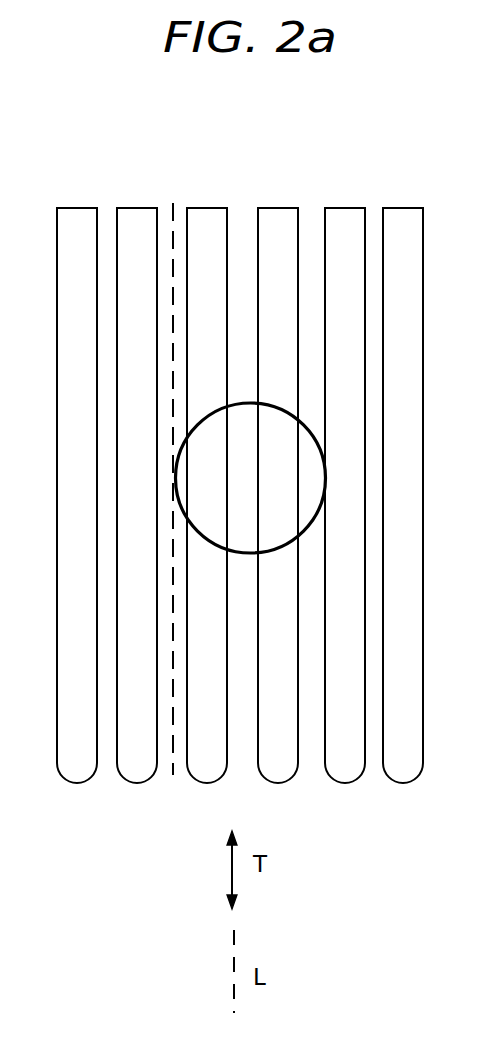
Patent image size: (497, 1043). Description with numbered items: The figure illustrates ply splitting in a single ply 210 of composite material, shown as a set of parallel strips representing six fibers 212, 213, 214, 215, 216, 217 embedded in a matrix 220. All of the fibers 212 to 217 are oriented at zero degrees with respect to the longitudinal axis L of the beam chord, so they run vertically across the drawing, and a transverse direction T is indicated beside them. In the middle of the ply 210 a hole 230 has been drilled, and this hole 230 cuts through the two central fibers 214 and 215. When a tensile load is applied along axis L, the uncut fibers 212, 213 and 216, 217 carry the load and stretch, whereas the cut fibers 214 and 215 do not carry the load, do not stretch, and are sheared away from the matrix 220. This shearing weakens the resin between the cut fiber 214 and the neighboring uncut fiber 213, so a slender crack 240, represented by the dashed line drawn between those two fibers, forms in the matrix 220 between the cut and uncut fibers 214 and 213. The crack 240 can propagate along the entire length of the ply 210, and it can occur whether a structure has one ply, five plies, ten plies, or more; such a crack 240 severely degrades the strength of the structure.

The ply 210 is at (170, 845).
The fiber 212 is at (85, 208).
The fiber 213 is at (140, 208).
The fiber 214 is at (210, 208).
The fiber 215 is at (273, 208).
The fiber 216 is at (337, 208).
The fiber 217 is at (408, 208).
The matrix 220 is at (317, 778).
The hole 230 is at (251, 478).
The crack 240 is at (172, 765).